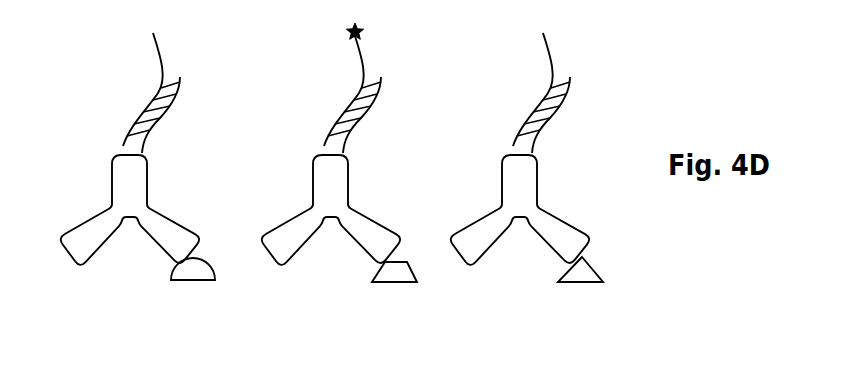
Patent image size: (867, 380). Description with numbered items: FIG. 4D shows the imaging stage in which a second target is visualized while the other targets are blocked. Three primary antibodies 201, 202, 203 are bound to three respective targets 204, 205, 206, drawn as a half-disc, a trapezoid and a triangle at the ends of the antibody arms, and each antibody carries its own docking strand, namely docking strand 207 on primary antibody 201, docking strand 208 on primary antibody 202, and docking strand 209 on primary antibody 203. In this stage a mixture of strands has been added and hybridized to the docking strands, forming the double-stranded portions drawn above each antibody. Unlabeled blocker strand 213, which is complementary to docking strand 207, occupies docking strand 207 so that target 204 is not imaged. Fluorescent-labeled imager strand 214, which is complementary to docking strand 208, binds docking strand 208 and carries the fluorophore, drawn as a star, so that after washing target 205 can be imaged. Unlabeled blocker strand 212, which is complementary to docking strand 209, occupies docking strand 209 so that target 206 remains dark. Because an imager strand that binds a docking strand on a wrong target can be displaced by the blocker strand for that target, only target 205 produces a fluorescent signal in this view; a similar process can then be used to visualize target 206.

The primary antibody 201 is at (66, 258).
The primary antibody 202 is at (267, 258).
The primary antibody 203 is at (455, 258).
The target 204 is at (193, 282).
The target 205 is at (393, 283).
The target 206 is at (582, 283).
The docking strand 207 is at (175, 103).
The docking strand 208 is at (376, 95).
The docking strand 209 is at (565, 95).
The blocker strand 212 is at (552, 50).
The blocker strand 213 is at (165, 52).
The imager strand 214 is at (363, 50).